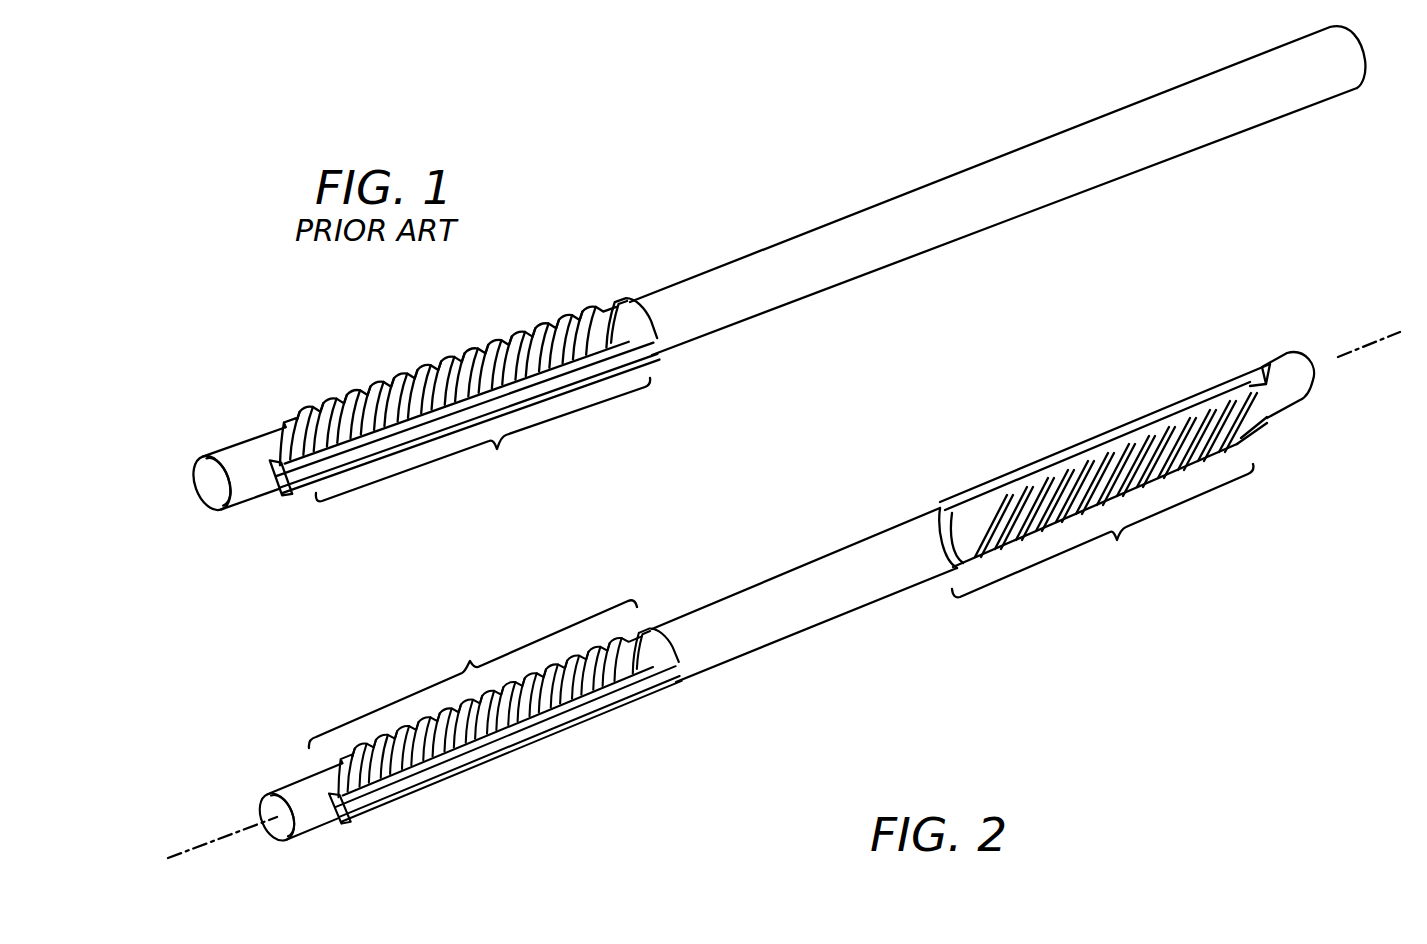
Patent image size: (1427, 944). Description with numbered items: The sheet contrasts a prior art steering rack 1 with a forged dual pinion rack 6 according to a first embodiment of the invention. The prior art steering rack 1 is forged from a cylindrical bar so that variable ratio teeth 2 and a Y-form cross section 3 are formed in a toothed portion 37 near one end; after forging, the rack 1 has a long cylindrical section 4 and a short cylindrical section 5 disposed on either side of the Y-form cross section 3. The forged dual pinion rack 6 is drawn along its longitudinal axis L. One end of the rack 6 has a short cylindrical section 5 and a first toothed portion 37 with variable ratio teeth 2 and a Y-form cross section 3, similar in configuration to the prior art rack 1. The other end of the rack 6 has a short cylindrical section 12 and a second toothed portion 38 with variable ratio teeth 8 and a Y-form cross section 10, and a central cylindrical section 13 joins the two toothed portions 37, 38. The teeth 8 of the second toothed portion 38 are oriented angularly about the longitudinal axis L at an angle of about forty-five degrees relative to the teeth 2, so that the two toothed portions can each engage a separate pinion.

In FIG. 1, the steering rack 1 is at (676, 222).
In FIG. 1, the variable ratio teeth 2 is at (447, 358).
In FIG. 2, the variable ratio teeth 2 is at (588, 695).
In FIG. 1, the Y-form cross section 3 is at (283, 490).
In FIG. 2, the Y-form cross section 3 is at (466, 772).
In FIG. 1, the long cylindrical section 4 is at (1200, 139).
In FIG. 1, the short cylindrical section 5 is at (248, 455).
In FIG. 2, the short cylindrical section 5 is at (283, 790).
In FIG. 1, the first toothed portion 37 is at (483, 439).
In FIG. 2, the first toothed portion 37 is at (473, 674).
In FIG. 2, the forged dual pinion rack 6 is at (886, 691).
In FIG. 2, the variable ratio teeth 8 is at (1038, 487).
In FIG. 2, the Y-form cross section 10 is at (1103, 427).
In FIG. 2, the short cylindrical section 12 is at (1293, 393).
In FIG. 2, the central cylindrical section 13 is at (787, 587).
In FIG. 2, the second toothed portion 38 is at (1102, 530).
In FIG. 2, the longitudinal axis L is at (190, 848).